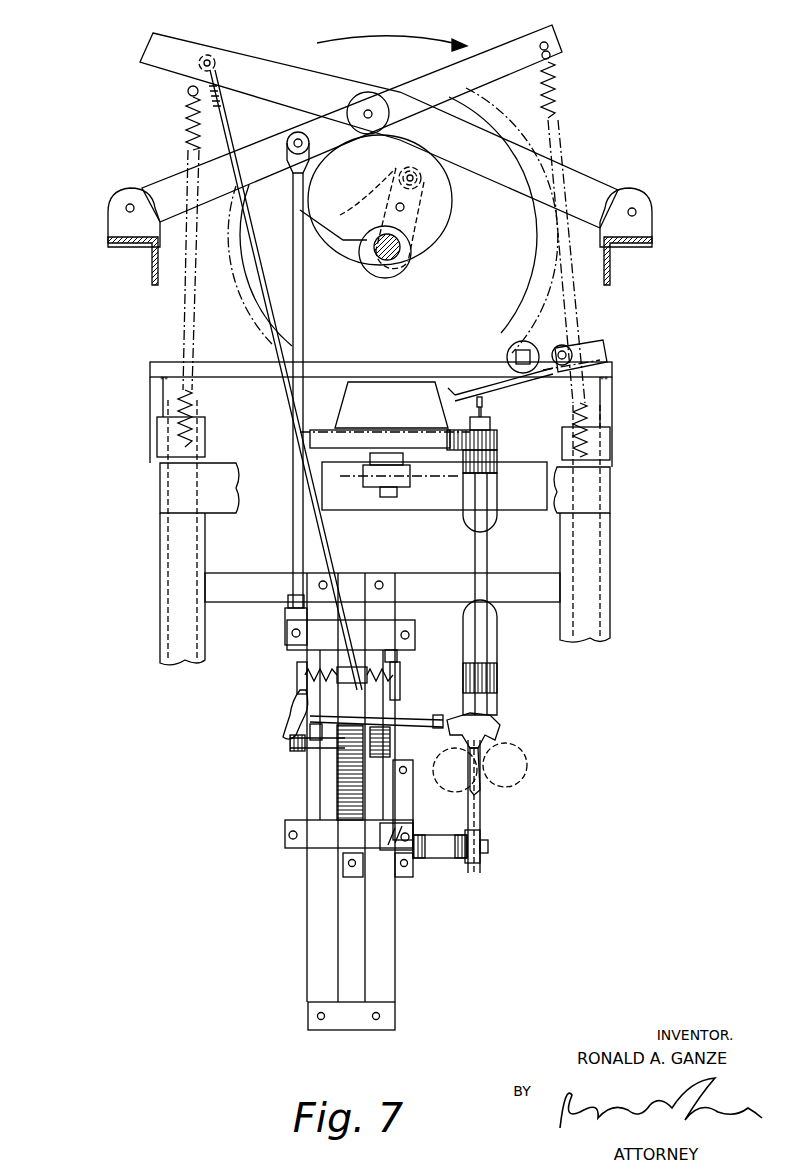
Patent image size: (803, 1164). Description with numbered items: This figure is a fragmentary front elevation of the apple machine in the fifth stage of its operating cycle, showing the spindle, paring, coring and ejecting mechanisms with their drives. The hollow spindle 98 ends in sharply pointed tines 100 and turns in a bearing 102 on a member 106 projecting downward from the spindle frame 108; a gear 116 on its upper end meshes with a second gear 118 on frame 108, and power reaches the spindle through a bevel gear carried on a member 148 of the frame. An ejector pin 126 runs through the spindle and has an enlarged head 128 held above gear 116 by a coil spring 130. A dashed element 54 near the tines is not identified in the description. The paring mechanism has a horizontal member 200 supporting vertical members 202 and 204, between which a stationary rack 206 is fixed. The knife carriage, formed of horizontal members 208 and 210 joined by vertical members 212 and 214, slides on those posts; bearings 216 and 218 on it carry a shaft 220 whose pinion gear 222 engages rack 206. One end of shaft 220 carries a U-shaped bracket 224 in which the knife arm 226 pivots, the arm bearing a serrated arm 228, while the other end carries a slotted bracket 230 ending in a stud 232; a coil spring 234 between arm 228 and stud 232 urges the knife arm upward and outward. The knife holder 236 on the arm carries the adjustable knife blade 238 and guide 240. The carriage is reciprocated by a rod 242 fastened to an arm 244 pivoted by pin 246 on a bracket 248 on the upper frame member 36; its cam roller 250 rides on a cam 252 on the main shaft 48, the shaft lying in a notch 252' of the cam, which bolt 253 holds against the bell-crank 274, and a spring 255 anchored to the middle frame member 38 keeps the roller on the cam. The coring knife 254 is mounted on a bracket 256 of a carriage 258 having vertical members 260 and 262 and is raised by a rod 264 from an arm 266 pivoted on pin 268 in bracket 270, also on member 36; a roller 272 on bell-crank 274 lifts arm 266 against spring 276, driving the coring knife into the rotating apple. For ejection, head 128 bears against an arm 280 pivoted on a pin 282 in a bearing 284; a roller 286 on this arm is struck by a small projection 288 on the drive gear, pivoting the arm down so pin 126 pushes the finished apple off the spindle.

The upper transverse horizontal member 36 is at (150, 268).
The middle transverse horizontal member 38 is at (158, 490).
The main shaft 48 is at (380, 262).
The roller 54 is at (520, 755).
The hollow spindle 98 is at (480, 555).
The tines 100 is at (492, 770).
The bearing 102 is at (497, 462).
The member 106 is at (468, 535).
The spindle frame 108 is at (415, 503).
The gear 116 is at (497, 440).
The second gear 118 is at (455, 450).
The ejector pin 126 is at (483, 412).
The enlarged head 128 is at (487, 397).
The coil spring 130 is at (490, 424).
The member 148 is at (250, 368).
The horizontal member 200 is at (265, 590).
The vertical member 202 is at (320, 943).
The vertical member 204 is at (380, 942).
The stationary rack 206 is at (355, 812).
The horizontal member 208 is at (398, 628).
The horizontal member 210 is at (290, 848).
The vertical member 212 is at (318, 698).
The vertical member 214 is at (385, 700).
The bearing 216 is at (305, 748).
The bearing 218 is at (392, 750).
The shaft 220 is at (310, 735).
The pinion gear 222 is at (352, 750).
The U-shaped bracket 224 is at (298, 720).
The knife arm 226 is at (410, 718).
The serrated arm 228 is at (297, 680).
The slotted bracket 230 is at (400, 680).
The stud 232 is at (398, 660).
The coil spring 234 is at (410, 638).
The knife holder 236 is at (482, 720).
The knife blade 238 is at (470, 795).
The guide 240 is at (492, 735).
The rod 242 is at (292, 550).
The horizontally extending arm 244 is at (523, 45).
The pin 246 is at (125, 204).
The bracket 248 is at (108, 230).
The cam roller 250 is at (366, 96).
The cam 252 is at (393, 220).
The notch 252' is at (333, 239).
The bolt 253 is at (395, 205).
The coring knife 254 is at (482, 815).
The spring 255 is at (560, 108).
The bracket 256 is at (445, 848).
The carriage 258 is at (308, 800).
The vertical member 260 is at (345, 866).
The vertical member 262 is at (408, 870).
The rod 264 is at (332, 550).
The horizontal arm 266 is at (222, 48).
The pin 268 is at (640, 212).
The bracket 270 is at (652, 222).
The roller 272 is at (440, 185).
The bell-crank 274 is at (415, 210).
The spring 276 is at (185, 120).
The arm 280 is at (490, 380).
The pin 282 is at (575, 352).
The bearing 284 is at (606, 358).
The roller 286 is at (565, 342).
The small projection 288 is at (516, 342).